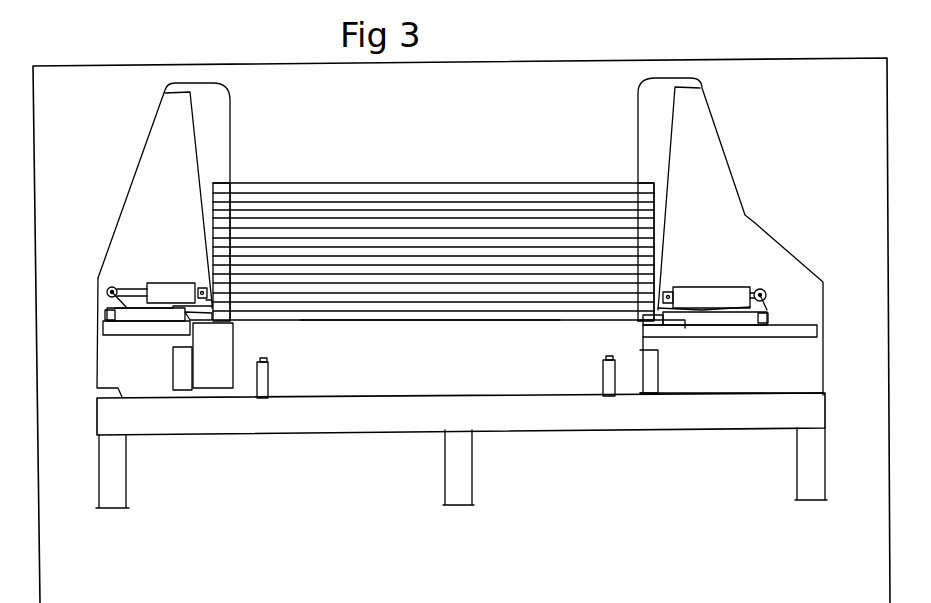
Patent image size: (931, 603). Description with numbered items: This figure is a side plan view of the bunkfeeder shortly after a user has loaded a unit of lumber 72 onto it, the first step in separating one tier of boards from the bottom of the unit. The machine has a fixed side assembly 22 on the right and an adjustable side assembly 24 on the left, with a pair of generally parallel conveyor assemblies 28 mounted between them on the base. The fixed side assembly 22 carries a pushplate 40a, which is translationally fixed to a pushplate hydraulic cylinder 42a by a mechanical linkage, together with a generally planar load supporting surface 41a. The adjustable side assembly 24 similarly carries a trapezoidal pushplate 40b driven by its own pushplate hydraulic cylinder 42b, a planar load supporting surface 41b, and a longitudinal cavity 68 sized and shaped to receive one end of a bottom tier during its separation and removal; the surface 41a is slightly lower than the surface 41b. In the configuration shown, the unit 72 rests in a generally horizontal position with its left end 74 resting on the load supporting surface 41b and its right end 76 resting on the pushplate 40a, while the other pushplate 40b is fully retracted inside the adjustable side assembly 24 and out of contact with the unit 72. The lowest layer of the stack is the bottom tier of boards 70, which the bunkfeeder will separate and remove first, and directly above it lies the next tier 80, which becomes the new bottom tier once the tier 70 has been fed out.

The fixed side assembly 22 is at (730, 227).
The adjustable side assembly 24 is at (172, 222).
The conveyor assemblies 28 is at (270, 372).
The pushplate 40a is at (640, 322).
The trapezoidal pushplate 40b is at (190, 313).
The load supporting surface 41a is at (640, 332).
The load supporting surface 41b is at (225, 322).
The pushplate hydraulic cylinder 42a is at (723, 297).
The pushplate hydraulic cylinder 42b is at (163, 290).
The longitudinal cavity 68 is at (225, 370).
The bottom tier of boards 70 is at (343, 315).
The unit of lumber 72 is at (433, 172).
The left end 74 is at (236, 180).
The right end 76 is at (625, 177).
The next tier 80 is at (390, 305).